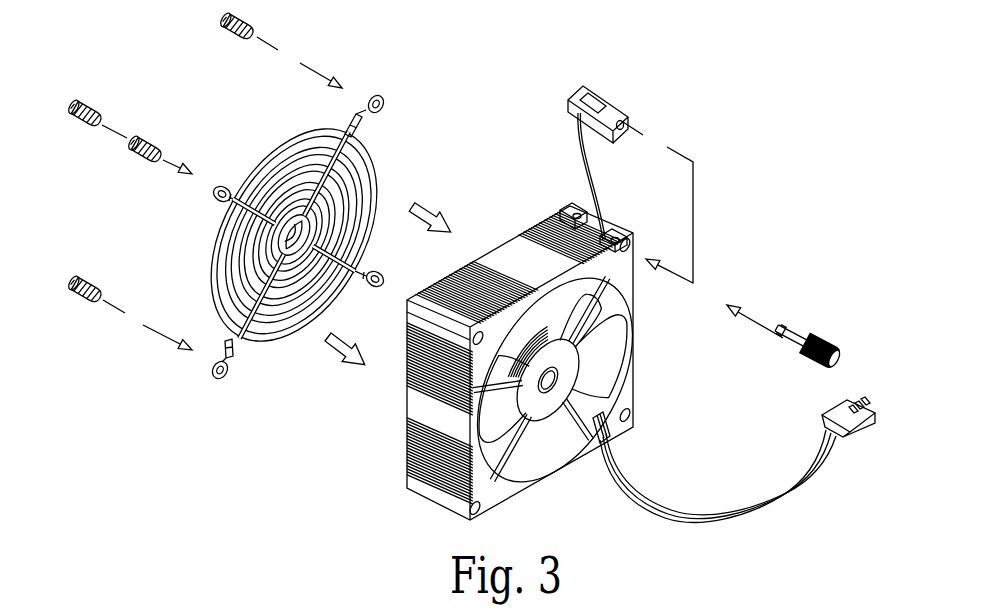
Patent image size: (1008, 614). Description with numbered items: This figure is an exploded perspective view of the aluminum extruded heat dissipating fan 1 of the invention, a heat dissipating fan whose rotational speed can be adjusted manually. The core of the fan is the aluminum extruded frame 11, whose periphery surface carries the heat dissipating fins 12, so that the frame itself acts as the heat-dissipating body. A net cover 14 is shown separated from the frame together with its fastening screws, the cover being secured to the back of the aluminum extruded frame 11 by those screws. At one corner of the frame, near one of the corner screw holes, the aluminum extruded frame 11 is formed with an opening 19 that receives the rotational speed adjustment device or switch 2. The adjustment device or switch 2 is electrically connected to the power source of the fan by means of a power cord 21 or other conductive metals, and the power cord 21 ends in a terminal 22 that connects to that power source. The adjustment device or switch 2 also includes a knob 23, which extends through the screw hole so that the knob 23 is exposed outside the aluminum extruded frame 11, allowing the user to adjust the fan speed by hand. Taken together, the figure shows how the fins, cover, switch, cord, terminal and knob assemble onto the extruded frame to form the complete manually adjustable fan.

The aluminum extruded heat dissipating fan 1 is at (536, 323).
The aluminum extruded frame 11 is at (497, 257).
The heat dissipating fins 12 is at (528, 240).
The net cover 14 is at (266, 166).
The opening 19 is at (608, 228).
The rotational speed adjustment device or switch 2 is at (610, 98).
The power cord 21 is at (580, 160).
The terminal 22 is at (838, 415).
The knob 23 is at (818, 343).